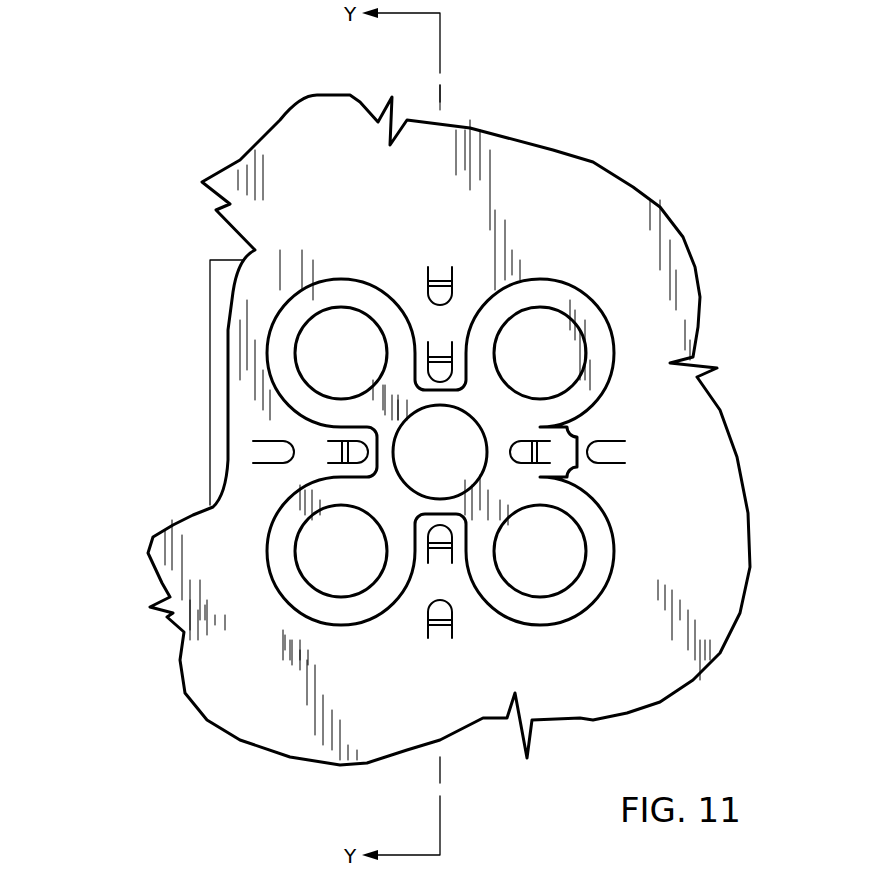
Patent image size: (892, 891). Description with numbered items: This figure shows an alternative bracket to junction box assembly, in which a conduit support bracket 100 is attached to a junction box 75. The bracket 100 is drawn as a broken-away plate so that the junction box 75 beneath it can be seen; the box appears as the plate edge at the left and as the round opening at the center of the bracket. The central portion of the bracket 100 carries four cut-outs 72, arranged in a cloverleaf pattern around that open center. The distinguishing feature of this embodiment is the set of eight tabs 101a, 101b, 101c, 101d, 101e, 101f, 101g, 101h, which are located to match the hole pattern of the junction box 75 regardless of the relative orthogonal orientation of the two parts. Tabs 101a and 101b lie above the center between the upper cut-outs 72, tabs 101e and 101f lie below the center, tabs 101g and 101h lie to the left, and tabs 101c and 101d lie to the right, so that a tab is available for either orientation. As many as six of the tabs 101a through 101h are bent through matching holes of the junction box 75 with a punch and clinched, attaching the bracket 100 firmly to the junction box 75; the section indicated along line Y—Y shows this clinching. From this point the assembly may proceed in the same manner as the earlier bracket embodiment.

The bracket 100 is at (614, 208).
The junction box 75 is at (208, 280).
The cut-outs 72 is at (358, 283).
The tab 101a is at (428, 293).
The tab 101b is at (456, 362).
The tab 101c is at (523, 466).
The tab 101d is at (608, 440).
The tab 101e is at (430, 540).
The tab 101f is at (452, 613).
The tab 101g is at (263, 441).
The tab 101h is at (355, 440).